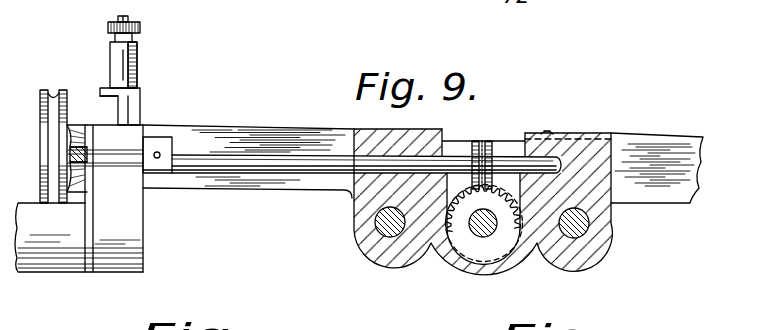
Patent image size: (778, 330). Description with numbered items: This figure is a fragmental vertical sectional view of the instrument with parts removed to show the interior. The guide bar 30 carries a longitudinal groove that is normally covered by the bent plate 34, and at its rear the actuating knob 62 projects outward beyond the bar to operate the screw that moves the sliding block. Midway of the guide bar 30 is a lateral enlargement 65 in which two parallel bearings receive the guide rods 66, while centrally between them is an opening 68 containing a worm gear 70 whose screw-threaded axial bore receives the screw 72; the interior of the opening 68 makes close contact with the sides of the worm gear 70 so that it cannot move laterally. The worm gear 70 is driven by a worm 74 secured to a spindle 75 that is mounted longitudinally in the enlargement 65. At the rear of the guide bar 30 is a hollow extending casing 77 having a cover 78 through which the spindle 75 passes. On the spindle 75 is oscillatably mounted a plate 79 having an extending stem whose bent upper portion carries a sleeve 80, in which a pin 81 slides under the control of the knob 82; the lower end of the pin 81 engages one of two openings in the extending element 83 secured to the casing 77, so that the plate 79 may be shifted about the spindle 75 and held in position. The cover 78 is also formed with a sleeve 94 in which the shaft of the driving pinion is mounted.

The guide bar 30 is at (273, 138).
The bent plate 34 is at (667, 137).
The actuating knob 62 is at (45, 123).
The lateral enlargement 65 is at (429, 230).
The guide rod 66 is at (393, 223).
The opening 68 is at (465, 143).
The worm gear 70 is at (477, 247).
The screw 72 is at (488, 228).
The worm 74 is at (503, 140).
The spindle 75 is at (213, 155).
The casing 77 is at (97, 245).
The cover 78 is at (88, 197).
The plate 79 is at (112, 108).
The sleeve 80 is at (128, 68).
The pin 81 is at (130, 18).
The knob 82 is at (140, 28).
The extending element 83 is at (133, 100).
The sleeve 94 is at (65, 253).